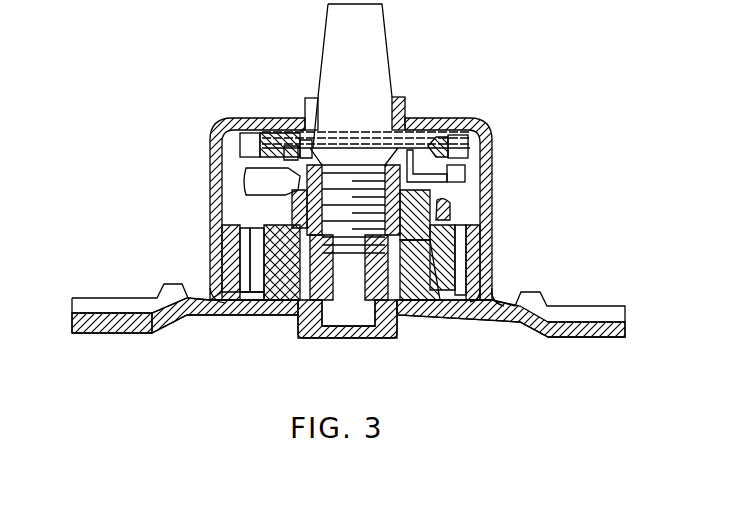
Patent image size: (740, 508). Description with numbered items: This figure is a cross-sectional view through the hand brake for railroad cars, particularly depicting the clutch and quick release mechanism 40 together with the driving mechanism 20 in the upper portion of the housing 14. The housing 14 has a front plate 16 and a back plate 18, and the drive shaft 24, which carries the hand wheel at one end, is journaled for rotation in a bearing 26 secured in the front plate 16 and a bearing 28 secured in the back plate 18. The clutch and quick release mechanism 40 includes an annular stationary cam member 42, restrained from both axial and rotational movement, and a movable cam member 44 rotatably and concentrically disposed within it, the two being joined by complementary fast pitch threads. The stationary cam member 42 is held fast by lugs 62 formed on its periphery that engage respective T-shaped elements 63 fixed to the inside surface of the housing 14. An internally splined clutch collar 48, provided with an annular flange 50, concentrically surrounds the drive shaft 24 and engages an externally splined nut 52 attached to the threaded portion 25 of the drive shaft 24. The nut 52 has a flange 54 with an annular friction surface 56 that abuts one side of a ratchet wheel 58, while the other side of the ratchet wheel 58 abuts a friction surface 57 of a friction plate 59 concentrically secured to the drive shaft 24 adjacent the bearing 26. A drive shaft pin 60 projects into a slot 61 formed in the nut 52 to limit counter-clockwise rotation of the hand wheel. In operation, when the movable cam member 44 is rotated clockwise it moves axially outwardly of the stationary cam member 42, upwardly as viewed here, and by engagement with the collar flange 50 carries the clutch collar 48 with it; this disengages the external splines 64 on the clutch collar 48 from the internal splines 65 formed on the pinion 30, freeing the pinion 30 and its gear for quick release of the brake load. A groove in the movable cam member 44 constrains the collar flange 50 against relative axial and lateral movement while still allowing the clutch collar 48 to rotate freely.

The housing 14 is at (126, 268).
The front plate 16 is at (488, 128).
The back plate 18 is at (556, 340).
The driving mechanism 20 is at (506, 72).
The drive shaft 24 is at (365, 32).
The threaded portion 25 is at (262, 151).
The bearing 26 is at (404, 102).
The bearing 28 is at (394, 332).
The pinion 30 is at (305, 278).
The clutch and quick release mechanism 40 is at (198, 124).
The stationary cam member 42 is at (478, 240).
The movable cam member 44 is at (155, 206).
The clutch collar 48 is at (300, 180).
The annular flange 50 is at (246, 200).
The nut 52 is at (456, 192).
The flange 54 is at (466, 178).
The annular friction surface 56 is at (440, 158).
The friction surface 57 is at (242, 140).
The ratchet wheel 58 is at (470, 146).
The friction plate 59 is at (284, 122).
The drive shaft pin 60 is at (289, 146).
The slot 61 is at (306, 136).
The lugs 62 is at (240, 256).
The T-shaped elements 63 is at (230, 233).
The external splines 64 is at (242, 265).
The internal splines 65 is at (275, 262).